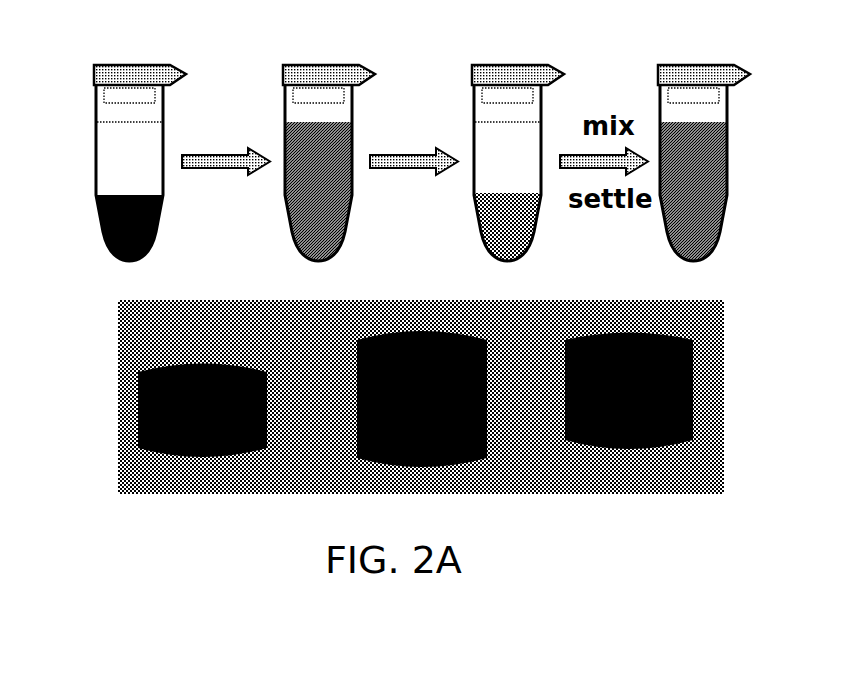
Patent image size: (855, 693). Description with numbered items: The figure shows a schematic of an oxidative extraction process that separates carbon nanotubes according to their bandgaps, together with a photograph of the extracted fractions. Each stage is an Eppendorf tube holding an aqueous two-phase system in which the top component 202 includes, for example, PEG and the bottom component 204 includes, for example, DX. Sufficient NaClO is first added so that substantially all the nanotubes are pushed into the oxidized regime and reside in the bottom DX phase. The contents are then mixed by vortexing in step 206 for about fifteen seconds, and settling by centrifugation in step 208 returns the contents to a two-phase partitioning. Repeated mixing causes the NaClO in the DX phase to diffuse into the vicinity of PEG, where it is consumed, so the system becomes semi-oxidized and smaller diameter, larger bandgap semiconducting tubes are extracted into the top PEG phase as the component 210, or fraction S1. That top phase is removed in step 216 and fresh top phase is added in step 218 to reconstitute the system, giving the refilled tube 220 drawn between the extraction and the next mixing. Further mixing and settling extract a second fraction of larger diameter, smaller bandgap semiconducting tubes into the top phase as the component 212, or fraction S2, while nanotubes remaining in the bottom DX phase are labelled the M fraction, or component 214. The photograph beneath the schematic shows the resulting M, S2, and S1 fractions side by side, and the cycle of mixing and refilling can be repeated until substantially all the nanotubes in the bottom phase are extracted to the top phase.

The top component 202 is at (120, 171).
The bottom component 204 is at (100, 210).
The mixing step 206 is at (223, 106).
The settling step 208 is at (224, 207).
The component S1 210 is at (312, 127).
The component S2 212 is at (707, 165).
The component M 214 is at (707, 230).
The removal step 216 is at (405, 112).
The refilling step 218 is at (408, 185).
The refilled tube 220 is at (513, 165).